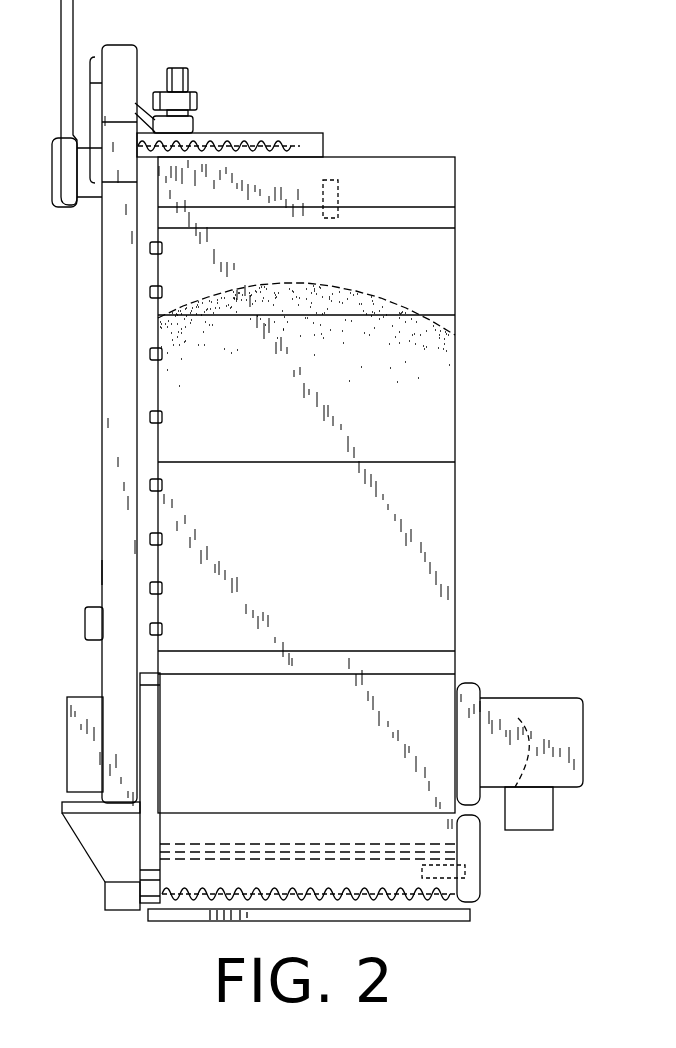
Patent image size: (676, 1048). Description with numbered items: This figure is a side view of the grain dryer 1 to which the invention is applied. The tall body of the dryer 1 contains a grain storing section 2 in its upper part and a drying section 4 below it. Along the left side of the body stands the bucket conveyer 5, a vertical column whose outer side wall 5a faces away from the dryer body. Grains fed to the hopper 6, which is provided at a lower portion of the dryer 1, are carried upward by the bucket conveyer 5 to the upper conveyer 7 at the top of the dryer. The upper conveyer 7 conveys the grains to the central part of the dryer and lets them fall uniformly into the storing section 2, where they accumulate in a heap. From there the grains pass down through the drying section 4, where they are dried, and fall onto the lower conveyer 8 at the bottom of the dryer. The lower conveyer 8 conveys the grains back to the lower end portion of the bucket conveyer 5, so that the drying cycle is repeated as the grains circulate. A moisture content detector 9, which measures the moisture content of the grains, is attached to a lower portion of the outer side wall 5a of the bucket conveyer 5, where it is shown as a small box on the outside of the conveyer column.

The grain dryer 1 is at (455, 283).
The grain storing section 2 is at (407, 408).
The drying section 4 is at (437, 707).
The bucket conveyer 5 is at (113, 363).
The outer side wall 5a is at (103, 571).
The hopper 6 is at (93, 848).
The upper conveyer 7 is at (257, 113).
The lower conveyer 8 is at (347, 869).
The moisture content detector 9 is at (89, 627).